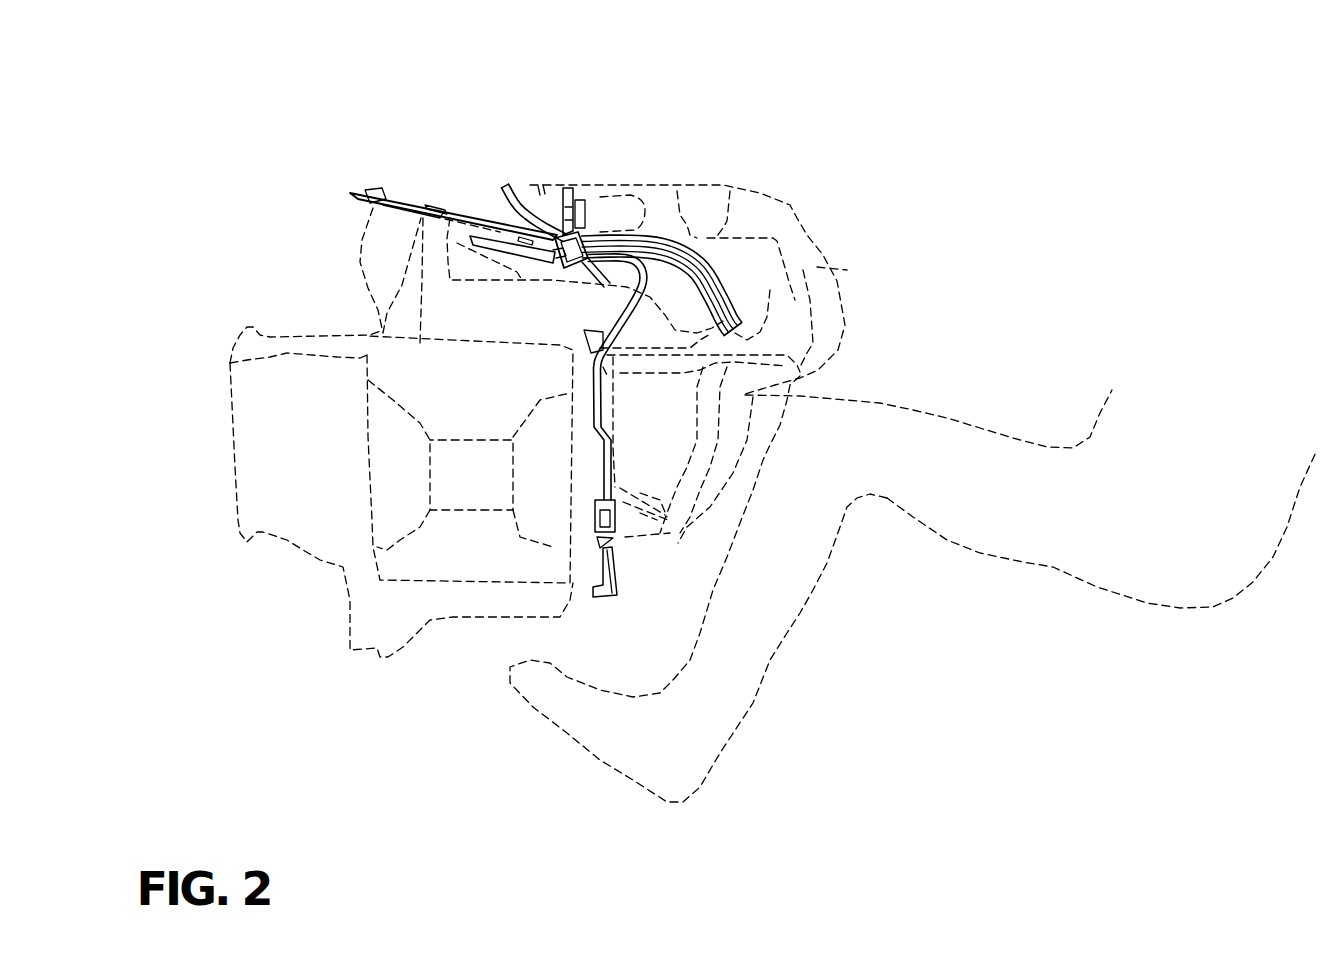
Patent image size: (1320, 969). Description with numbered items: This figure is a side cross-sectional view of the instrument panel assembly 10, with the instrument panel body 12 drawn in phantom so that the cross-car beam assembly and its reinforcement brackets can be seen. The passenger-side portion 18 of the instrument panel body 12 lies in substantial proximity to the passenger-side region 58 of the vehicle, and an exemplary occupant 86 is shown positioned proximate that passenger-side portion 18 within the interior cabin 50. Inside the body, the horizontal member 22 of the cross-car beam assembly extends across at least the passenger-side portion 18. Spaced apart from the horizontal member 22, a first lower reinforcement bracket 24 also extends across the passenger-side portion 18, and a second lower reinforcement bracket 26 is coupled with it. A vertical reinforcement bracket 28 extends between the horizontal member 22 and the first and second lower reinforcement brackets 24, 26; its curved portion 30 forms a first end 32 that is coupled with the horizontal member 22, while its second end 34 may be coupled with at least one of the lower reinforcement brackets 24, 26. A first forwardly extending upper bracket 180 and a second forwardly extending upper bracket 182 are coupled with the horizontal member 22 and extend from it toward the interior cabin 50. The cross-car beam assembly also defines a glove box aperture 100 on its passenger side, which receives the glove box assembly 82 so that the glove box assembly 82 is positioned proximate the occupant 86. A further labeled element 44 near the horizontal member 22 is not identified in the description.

The instrument panel assembly 10 is at (442, 132).
The instrument panel body 12 is at (790, 205).
The passenger-side portion 18 is at (690, 160).
The horizontal member 22 is at (570, 230).
The first lower reinforcement bracket 24 is at (610, 523).
The second lower reinforcement bracket 26 is at (603, 528).
The vertical reinforcement bracket 28 is at (597, 437).
The curved portion 30 is at (637, 310).
The first end 32 is at (594, 246).
The second end 34 is at (597, 503).
The curved arm 44 is at (520, 170).
The interior cabin 50 is at (1087, 211).
The passenger-side region 58 is at (997, 304).
The glove box assembly 82 is at (744, 395).
The occupant 86 is at (960, 420).
The glove box aperture 100 is at (640, 393).
The first forwardly extending upper bracket 180 is at (725, 214).
The second forwardly extending upper bracket 182 is at (699, 243).